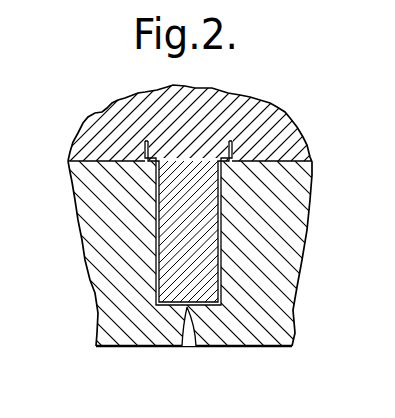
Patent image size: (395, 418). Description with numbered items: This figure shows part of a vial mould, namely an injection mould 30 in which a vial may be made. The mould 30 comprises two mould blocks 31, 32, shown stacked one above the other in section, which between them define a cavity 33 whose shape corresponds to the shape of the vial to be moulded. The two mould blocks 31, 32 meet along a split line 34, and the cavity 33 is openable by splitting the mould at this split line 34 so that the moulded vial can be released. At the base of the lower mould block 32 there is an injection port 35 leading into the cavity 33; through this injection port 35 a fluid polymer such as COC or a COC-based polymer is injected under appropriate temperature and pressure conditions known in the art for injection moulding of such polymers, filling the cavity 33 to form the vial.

The injection mould 30 is at (288, 103).
The mould block 31 is at (114, 120).
The mould block 32 is at (117, 266).
The cavity 33 is at (221, 229).
The split line 34 is at (99, 162).
The injection port 35 is at (188, 337).